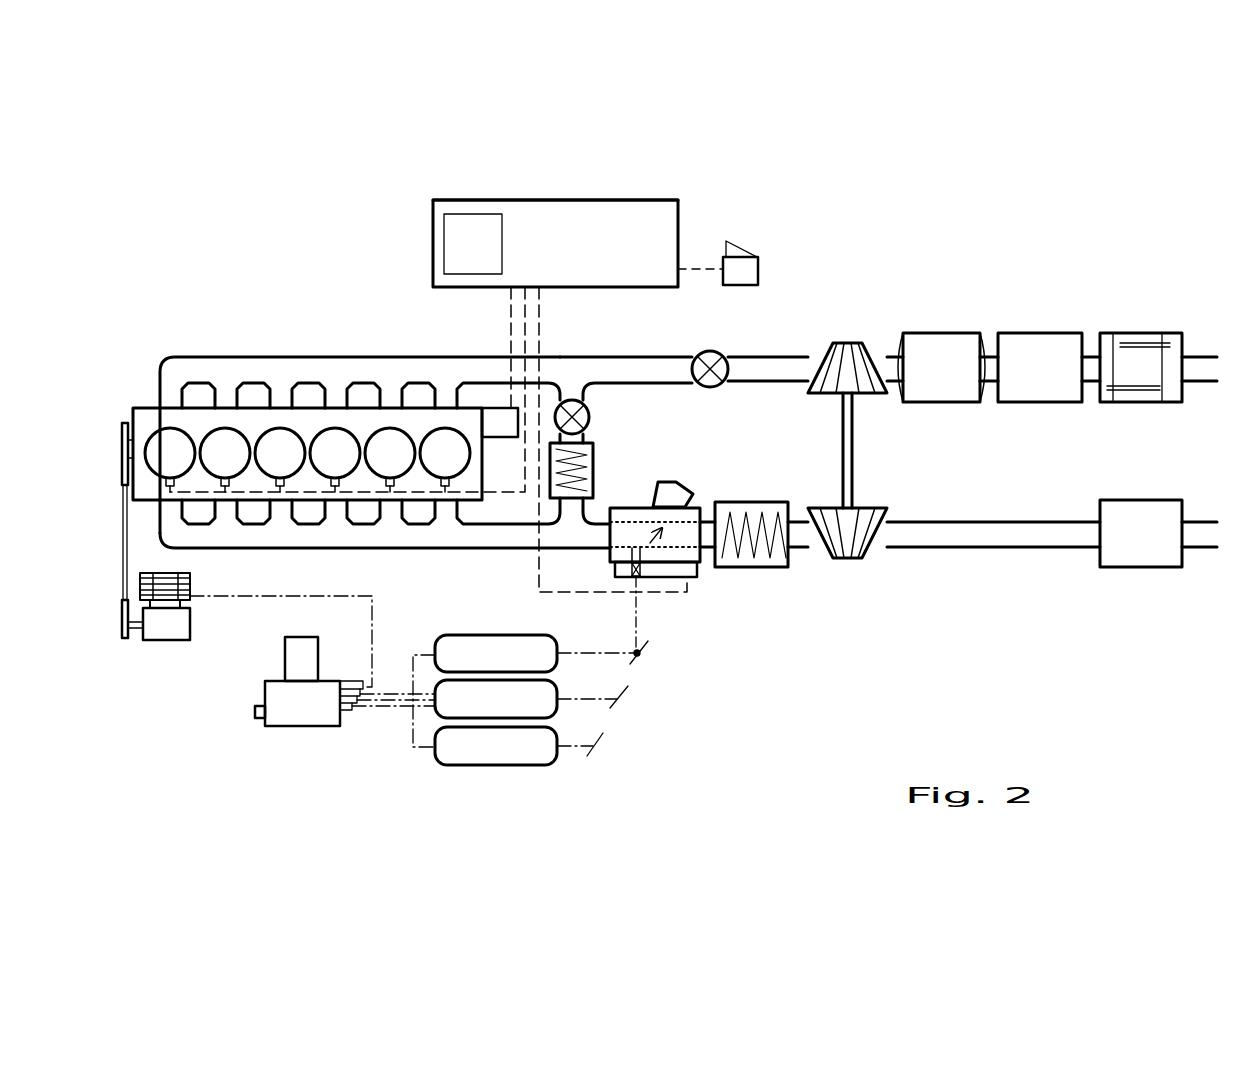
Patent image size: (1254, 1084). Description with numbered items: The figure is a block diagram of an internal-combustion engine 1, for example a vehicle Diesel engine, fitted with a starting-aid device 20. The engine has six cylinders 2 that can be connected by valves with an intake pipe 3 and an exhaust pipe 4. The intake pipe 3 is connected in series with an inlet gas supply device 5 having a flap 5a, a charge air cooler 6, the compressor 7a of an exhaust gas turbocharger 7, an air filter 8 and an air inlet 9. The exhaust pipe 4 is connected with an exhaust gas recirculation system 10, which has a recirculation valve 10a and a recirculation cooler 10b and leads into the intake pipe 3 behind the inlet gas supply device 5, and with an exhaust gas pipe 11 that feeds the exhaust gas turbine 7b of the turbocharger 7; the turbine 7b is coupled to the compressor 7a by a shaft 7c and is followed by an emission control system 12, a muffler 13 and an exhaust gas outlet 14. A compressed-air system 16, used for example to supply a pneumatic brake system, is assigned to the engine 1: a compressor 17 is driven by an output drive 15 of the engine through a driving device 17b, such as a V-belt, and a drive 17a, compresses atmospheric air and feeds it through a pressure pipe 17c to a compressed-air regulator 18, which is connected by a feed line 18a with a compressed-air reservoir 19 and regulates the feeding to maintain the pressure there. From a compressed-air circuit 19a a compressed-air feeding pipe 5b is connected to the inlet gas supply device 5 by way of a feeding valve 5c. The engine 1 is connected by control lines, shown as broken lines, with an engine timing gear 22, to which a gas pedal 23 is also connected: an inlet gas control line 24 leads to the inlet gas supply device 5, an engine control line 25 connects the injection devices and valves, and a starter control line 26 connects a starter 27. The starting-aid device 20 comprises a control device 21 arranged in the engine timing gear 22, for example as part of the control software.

The internal-combustion engine 1 is at (147, 408).
The cylinder 2 is at (232, 440).
The intake pipe 3 is at (380, 543).
The exhaust pipe 4 is at (300, 370).
The inlet gas supply device 5 is at (701, 507).
The flap 5a is at (662, 532).
The compressed-air feeding pipe 5b is at (638, 618).
The feeding valve 5c is at (641, 570).
The charge air cooler 6 is at (762, 567).
The exhaust gas turbocharger 7 is at (887, 575).
The compressor 7a is at (838, 560).
The exhaust gas turbine 7b is at (857, 343).
The shaft 7c is at (852, 437).
The air filter 8 is at (1135, 567).
The air inlet 9 is at (1205, 547).
The exhaust gas recirculation system 10 is at (617, 347).
The recirculation valve 10a is at (590, 413).
The recirculation cooler 10b is at (593, 468).
The exhaust gas pipe 11 is at (787, 355).
The emission control system 12 is at (960, 318).
The muffler 13 is at (1147, 333).
The exhaust gas outlet 14 is at (1207, 355).
The output drive 15 is at (120, 458).
The compressed-air system 16 is at (155, 762).
The compressor 17 is at (160, 643).
The drive 17a is at (120, 632).
The driving device 17b is at (122, 540).
The pressure pipe 17c is at (252, 598).
The compressed-air regulator 18 is at (302, 726).
The feed line 18a is at (382, 726).
The compressed-air reservoir 19 is at (495, 787).
The compressed-air circuit 19a is at (580, 771).
The starting-aid device 20 is at (561, 181).
The control device 21 is at (455, 215).
The engine timing gear 22 is at (655, 200).
The gas pedal 23 is at (758, 255).
The inlet gas control line 24 is at (537, 567).
The engine control line 25 is at (495, 492).
The starter control line 26 is at (510, 385).
The starter 27 is at (495, 410).